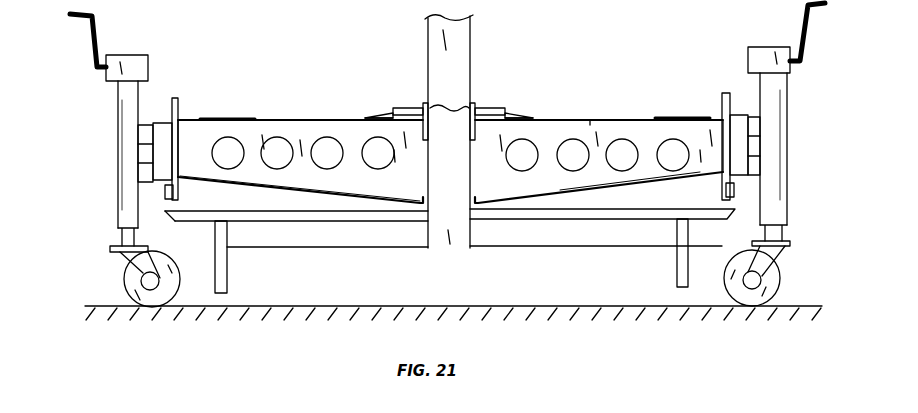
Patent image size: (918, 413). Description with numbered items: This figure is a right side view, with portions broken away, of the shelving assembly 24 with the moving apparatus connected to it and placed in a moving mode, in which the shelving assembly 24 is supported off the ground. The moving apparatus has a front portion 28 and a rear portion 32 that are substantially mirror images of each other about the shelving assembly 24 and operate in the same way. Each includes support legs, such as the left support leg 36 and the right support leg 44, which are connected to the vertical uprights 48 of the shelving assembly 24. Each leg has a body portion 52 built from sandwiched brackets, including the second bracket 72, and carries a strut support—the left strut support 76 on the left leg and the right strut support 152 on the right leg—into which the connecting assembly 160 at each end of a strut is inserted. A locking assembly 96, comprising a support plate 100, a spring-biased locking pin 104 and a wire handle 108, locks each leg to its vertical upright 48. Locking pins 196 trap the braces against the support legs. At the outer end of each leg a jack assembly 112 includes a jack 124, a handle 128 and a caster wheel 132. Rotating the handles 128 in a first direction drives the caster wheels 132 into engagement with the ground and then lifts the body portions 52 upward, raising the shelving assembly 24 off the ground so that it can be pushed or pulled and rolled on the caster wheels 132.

The shelving assembly 24 is at (322, 253).
The front portion 28 is at (605, 70).
The rear portion 32 is at (298, 80).
The left support leg 36 is at (582, 195).
The right support leg 44 is at (308, 196).
The vertical upright 48 is at (466, 37).
The body portion 52 is at (327, 187).
The second bracket 72 is at (589, 122).
The left strut support 76 is at (648, 110).
The locking assembly 96 is at (407, 106).
The support plate 100 is at (449, 108).
The spring-biased locking pin 104 is at (380, 113).
The wire handle or lanyard 108 is at (372, 110).
The jack assembly 112 is at (155, 48).
The jack 124 is at (122, 155).
The handle 128 is at (94, 50).
The caster wheel 132 is at (128, 266).
The right strut support 152 is at (265, 116).
The connecting assembly 160 is at (212, 118).
The locking pin 196 is at (172, 105).